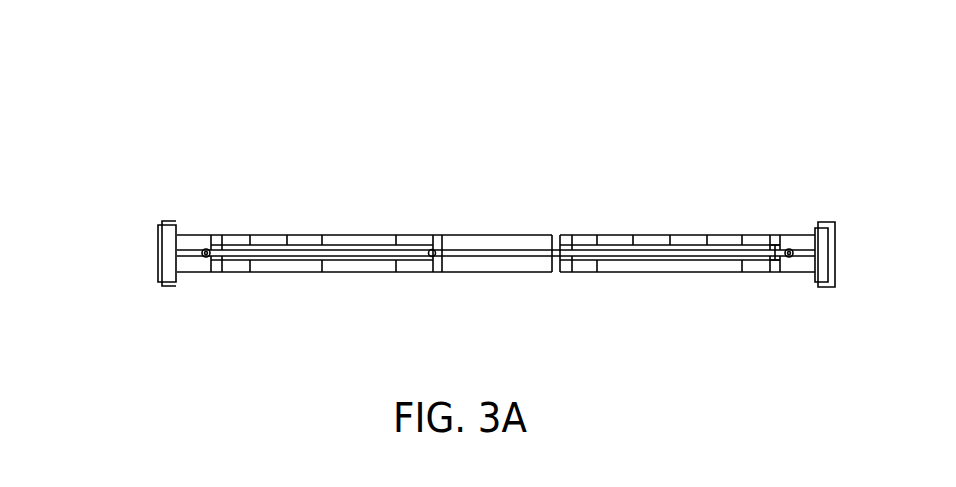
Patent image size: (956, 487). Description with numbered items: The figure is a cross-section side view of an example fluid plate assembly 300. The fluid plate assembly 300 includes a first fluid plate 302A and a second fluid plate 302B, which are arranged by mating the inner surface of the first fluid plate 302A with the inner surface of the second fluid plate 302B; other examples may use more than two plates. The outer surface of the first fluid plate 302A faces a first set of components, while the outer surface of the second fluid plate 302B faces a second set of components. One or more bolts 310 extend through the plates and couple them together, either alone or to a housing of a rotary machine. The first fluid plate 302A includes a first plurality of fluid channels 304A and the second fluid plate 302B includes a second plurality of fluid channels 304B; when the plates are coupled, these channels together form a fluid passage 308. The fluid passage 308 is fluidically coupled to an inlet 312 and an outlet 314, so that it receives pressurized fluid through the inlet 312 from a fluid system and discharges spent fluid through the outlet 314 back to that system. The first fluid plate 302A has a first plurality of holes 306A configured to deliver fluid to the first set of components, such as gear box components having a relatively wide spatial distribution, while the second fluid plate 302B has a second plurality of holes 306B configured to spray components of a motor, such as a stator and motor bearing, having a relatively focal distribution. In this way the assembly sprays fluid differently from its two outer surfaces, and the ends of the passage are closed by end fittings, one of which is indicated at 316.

The fluid plate assembly 300 is at (90, 112).
The first fluid plate 302A is at (138, 241).
The second fluid plate 302B is at (138, 264).
The first plurality of fluid channels 304A is at (568, 235).
The second plurality of fluid channels 304B is at (590, 268).
The first plurality of holes 306A is at (358, 238).
The second plurality of holes 306B is at (395, 263).
The fluid passage 308 is at (424, 248).
The bolt 310 is at (820, 217).
The inlet 312 is at (208, 249).
The outlet 314 is at (778, 237).
The second fastener 316 is at (789, 257).